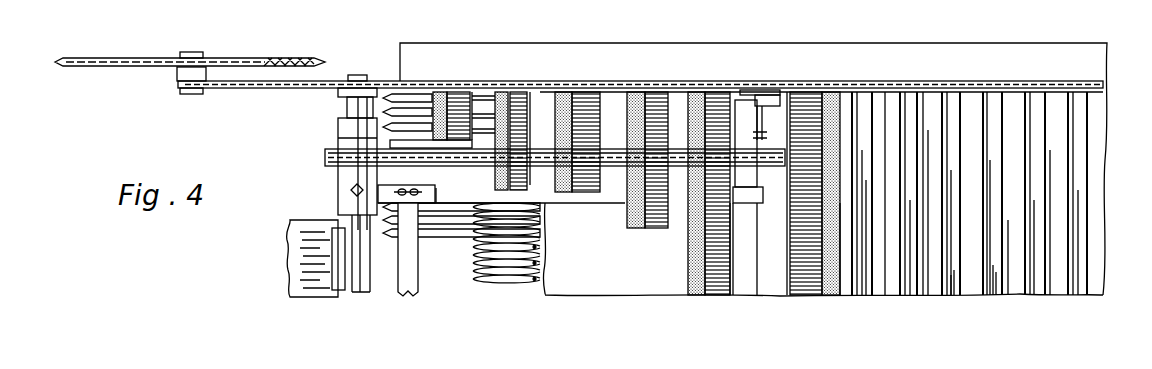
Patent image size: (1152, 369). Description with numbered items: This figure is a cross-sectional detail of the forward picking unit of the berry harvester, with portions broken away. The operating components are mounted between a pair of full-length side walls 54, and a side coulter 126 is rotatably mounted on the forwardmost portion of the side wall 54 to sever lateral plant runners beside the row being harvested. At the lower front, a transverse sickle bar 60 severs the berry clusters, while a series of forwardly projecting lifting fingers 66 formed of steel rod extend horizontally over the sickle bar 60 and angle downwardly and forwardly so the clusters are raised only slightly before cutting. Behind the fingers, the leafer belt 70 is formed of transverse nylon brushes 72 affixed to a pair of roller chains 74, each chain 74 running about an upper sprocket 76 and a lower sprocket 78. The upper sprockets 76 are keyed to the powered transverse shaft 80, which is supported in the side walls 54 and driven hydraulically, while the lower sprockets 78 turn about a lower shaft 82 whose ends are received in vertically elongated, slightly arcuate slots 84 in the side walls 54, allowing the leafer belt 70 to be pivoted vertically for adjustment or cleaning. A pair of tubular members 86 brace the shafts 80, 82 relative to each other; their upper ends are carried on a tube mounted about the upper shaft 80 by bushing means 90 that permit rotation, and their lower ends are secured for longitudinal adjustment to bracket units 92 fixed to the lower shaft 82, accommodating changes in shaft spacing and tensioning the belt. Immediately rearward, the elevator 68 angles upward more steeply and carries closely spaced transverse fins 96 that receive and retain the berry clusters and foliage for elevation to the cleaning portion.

The side coulter 126 is at (98, 68).
The side wall 54 is at (277, 88).
The slot 84 is at (357, 75).
The lower sprocket 78 is at (329, 167).
The lifting finger 66 is at (408, 108).
The bracket unit 92 is at (433, 226).
The sickle bar 60 is at (510, 274).
The lower shaft 82 is at (352, 281).
The tubular member 86 is at (612, 192).
The roller chain 74 is at (612, 130).
The leafer belt 70 is at (678, 102).
The upper sprocket 76 is at (778, 168).
The upper shaft 80 is at (765, 95).
The bushing means 90 is at (772, 272).
The nylon brush 72 is at (807, 297).
The elevator 68 is at (1085, 160).
The fin 96 is at (989, 292).